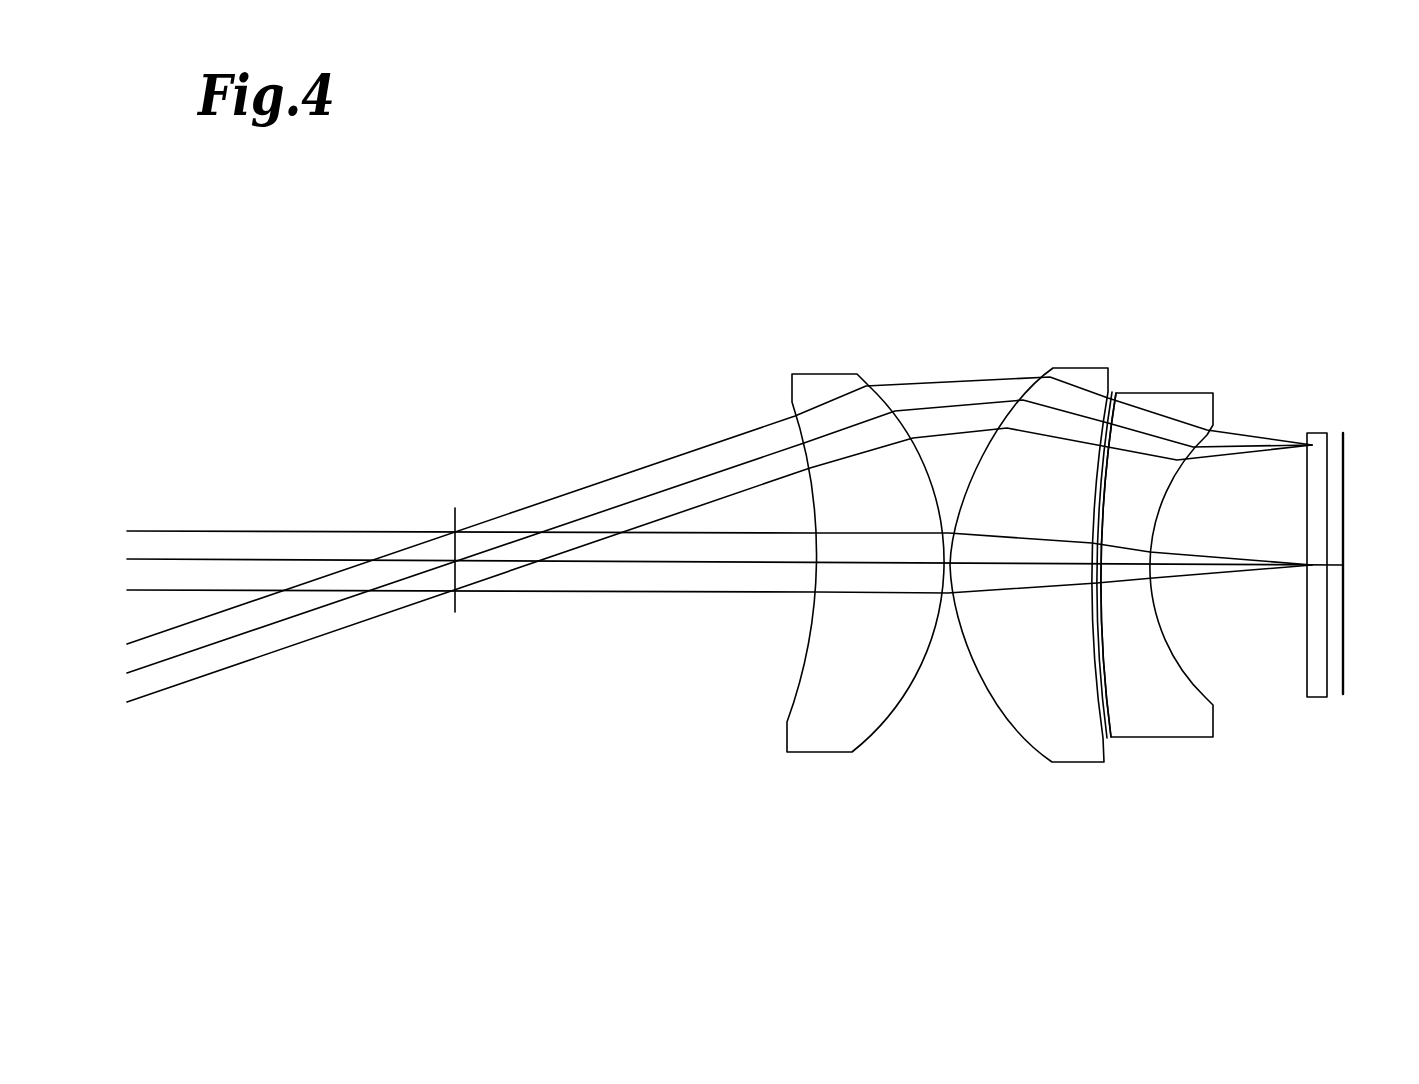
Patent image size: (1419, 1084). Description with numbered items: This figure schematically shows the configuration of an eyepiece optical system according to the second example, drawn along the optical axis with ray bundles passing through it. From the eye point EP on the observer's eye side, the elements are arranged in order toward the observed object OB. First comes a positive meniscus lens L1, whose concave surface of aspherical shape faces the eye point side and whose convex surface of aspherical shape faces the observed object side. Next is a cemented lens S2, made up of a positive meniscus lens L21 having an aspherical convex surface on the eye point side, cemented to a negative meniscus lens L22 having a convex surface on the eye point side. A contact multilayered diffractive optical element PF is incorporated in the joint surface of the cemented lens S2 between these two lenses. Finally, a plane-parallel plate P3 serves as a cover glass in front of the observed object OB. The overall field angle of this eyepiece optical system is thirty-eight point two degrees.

The positive meniscus lens L1 is at (825, 385).
The cemented lens S2 is at (1205, 242).
The positive meniscus lens L21 is at (1080, 376).
The negative meniscus lens L22 is at (1150, 405).
The contact multilayered diffractive optical element PF is at (1115, 762).
The plane-parallel plate P3 is at (1320, 438).
The object / image plane OB is at (1347, 462).
The eye point / exit pupil EP is at (453, 578).